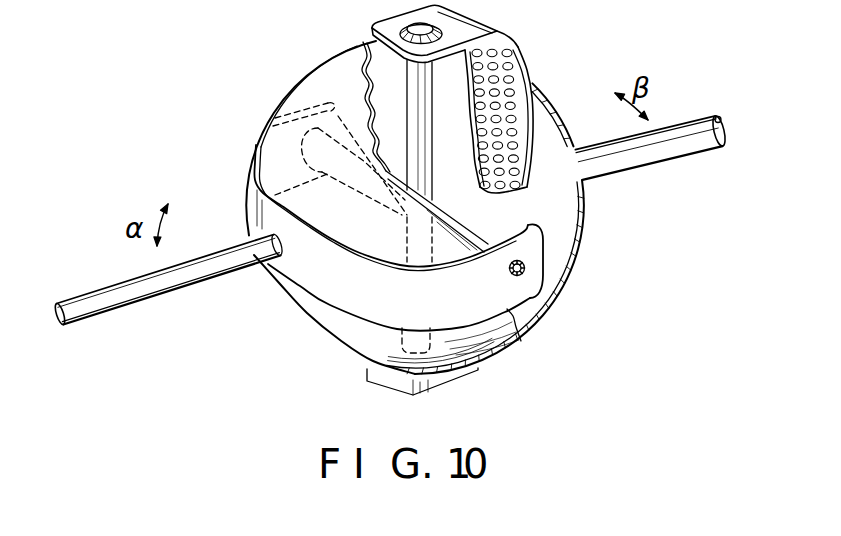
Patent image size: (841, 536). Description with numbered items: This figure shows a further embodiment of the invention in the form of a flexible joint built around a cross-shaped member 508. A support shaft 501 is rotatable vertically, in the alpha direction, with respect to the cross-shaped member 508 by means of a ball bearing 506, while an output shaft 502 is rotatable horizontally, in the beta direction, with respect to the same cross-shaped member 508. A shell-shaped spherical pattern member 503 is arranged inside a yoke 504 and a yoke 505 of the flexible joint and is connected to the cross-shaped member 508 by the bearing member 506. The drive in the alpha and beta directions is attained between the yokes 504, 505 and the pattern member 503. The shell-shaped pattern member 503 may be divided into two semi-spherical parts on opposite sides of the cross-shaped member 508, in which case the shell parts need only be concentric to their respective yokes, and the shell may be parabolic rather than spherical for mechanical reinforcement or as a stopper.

The support shaft 501 is at (96, 302).
The output shaft 502 is at (688, 130).
The shell-shaped spherical pattern member 503 is at (287, 92).
The yoke 504 is at (310, 263).
The yoke 505 is at (518, 44).
The ball bearing 506 is at (526, 268).
The cross-shaped member 508 is at (412, 101).